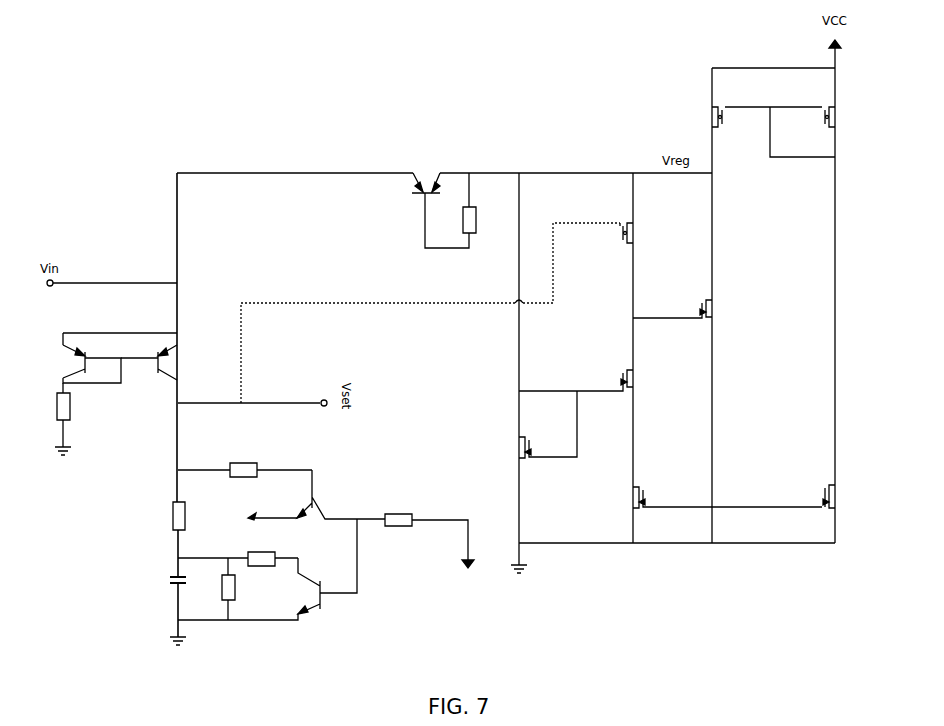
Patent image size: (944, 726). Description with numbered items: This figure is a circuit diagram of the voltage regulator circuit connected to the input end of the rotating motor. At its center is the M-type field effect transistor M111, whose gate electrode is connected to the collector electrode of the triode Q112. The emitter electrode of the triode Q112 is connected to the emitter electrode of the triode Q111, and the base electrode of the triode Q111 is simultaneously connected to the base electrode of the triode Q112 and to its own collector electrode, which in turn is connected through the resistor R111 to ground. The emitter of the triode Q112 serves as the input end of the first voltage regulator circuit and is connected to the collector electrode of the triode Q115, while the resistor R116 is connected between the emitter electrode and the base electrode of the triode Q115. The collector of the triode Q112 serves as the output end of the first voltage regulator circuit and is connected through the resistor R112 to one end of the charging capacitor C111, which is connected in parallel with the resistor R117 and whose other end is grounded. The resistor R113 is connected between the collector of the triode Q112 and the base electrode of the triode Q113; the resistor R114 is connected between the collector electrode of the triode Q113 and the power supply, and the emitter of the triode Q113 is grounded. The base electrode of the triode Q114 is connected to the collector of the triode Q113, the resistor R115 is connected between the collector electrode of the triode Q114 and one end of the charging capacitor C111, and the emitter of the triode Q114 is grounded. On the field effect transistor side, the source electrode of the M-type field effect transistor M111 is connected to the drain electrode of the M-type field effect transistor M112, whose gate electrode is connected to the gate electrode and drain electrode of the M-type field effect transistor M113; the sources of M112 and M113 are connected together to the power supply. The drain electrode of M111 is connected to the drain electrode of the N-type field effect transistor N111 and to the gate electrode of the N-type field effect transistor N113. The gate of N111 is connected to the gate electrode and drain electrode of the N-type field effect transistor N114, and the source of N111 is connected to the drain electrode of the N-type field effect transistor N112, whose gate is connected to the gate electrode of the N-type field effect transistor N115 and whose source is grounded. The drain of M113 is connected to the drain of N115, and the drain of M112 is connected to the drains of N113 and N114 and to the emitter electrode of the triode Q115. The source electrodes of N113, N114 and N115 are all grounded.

The triode Q111 is at (65, 364).
The triode Q112 is at (149, 377).
The triode Q113 is at (316, 531).
The triode Q114 is at (275, 597).
The triode Q115 is at (430, 172).
The resistor R111 is at (41, 419).
The resistor R112 is at (162, 513).
The resistor R113 is at (245, 460).
The resistor R114 is at (424, 533).
The resistor R115 is at (238, 551).
The resistor R116 is at (466, 210).
The resistor R117 is at (214, 589).
The charging capacitor C111 is at (162, 583).
The M-type field effect transistor M111 is at (603, 251).
The M-type field effect transistor M112 is at (742, 130).
The M-type field effect transistor M113 is at (857, 115).
The N-type field effect transistor N111 is at (576, 380).
The N-type field effect transistor N112 is at (702, 498).
The N-type field effect transistor N113 is at (696, 310).
The N-type field effect transistor N114 is at (524, 430).
The N-type field effect transistor N115 is at (854, 496).